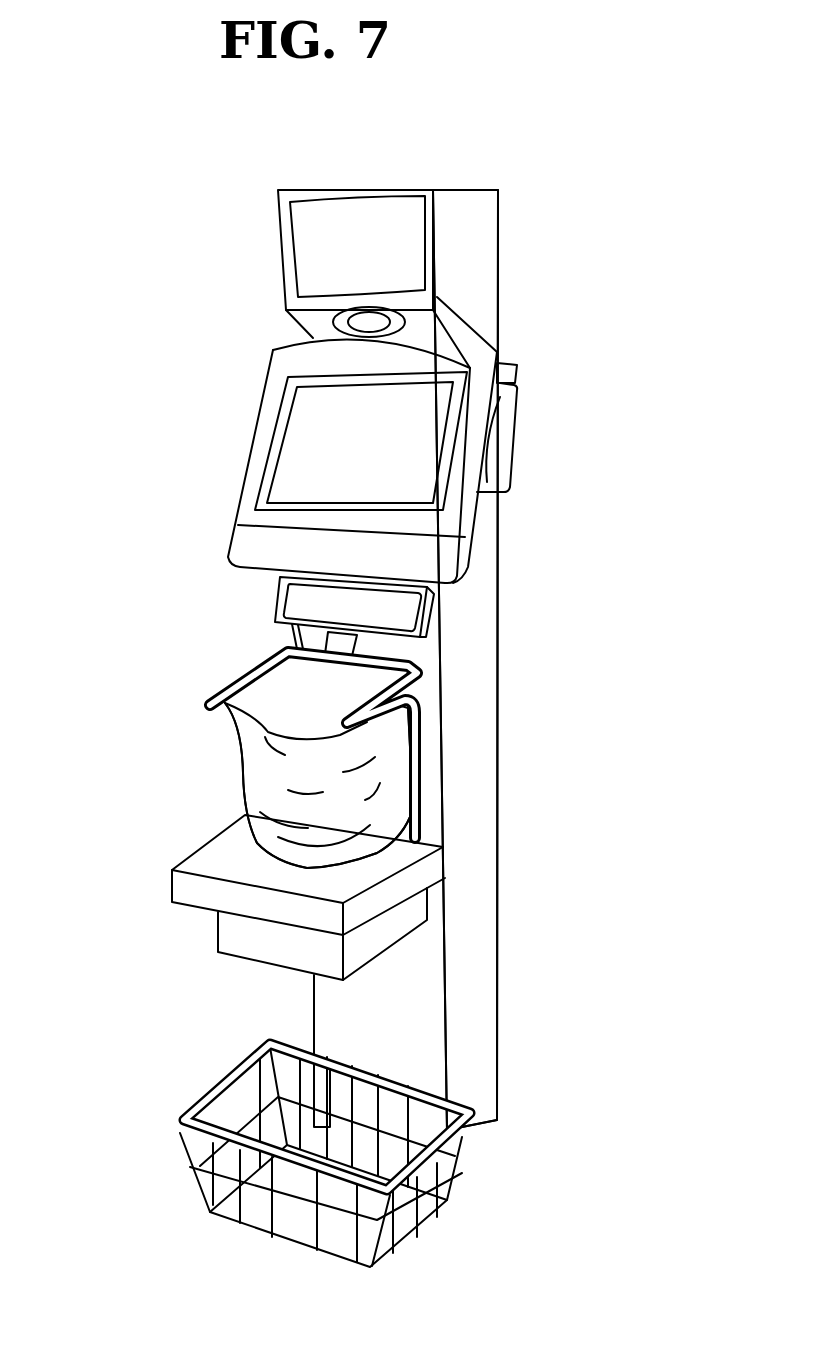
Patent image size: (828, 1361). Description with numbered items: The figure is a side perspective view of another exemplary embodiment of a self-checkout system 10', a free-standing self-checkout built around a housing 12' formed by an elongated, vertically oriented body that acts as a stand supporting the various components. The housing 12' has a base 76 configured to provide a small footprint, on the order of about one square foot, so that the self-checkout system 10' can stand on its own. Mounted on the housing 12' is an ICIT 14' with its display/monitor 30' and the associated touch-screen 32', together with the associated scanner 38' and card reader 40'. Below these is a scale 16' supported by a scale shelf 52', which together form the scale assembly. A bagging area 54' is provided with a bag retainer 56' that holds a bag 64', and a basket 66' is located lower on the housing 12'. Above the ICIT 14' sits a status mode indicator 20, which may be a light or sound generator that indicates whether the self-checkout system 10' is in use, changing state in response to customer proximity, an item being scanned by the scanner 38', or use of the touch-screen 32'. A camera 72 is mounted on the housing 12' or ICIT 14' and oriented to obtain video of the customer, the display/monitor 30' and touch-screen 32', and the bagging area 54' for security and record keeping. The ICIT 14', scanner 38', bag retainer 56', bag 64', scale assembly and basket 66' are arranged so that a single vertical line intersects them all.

The self-checkout system 10' is at (563, 579).
The housing 12' is at (508, 660).
The ICIT 14' is at (310, 458).
The scale 16' is at (270, 875).
The status mode indicator 20 is at (337, 208).
The display/monitor 30' is at (322, 441).
The touch-screen 32' is at (305, 447).
The scanner 38' is at (317, 616).
The card reader 40' is at (546, 428).
The scale shelf 52' is at (305, 952).
The bagging area 54' is at (233, 785).
The bag retainer 56' is at (267, 736).
The bag 64' is at (399, 784).
The basket 66' is at (325, 1180).
The camera 72 is at (353, 322).
The base 76 is at (517, 1078).